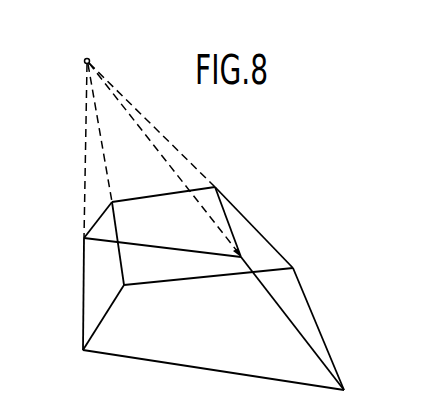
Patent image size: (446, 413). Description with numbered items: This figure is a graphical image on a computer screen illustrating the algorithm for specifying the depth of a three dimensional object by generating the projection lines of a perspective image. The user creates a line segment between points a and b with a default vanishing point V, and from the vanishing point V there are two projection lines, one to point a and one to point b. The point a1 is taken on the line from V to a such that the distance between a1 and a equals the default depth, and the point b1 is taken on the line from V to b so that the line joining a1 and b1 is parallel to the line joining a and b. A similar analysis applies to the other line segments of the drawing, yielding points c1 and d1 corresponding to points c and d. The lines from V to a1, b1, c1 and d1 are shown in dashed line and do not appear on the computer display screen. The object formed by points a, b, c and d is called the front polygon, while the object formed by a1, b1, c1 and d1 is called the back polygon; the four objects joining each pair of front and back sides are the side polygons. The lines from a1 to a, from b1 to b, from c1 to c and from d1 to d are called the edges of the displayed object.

The vanishing point V is at (162, 146).
The back polygon vertex a1 is at (149, 203).
The back polygon vertex b1 is at (254, 215).
The back polygon vertex c1 is at (214, 314).
The back polygon vertex d1 is at (71, 288).
The front polygon vertex a is at (188, 276).
The front polygon vertex b is at (318, 323).
The front polygon vertex c is at (220, 376).
The front polygon vertex d is at (73, 352).